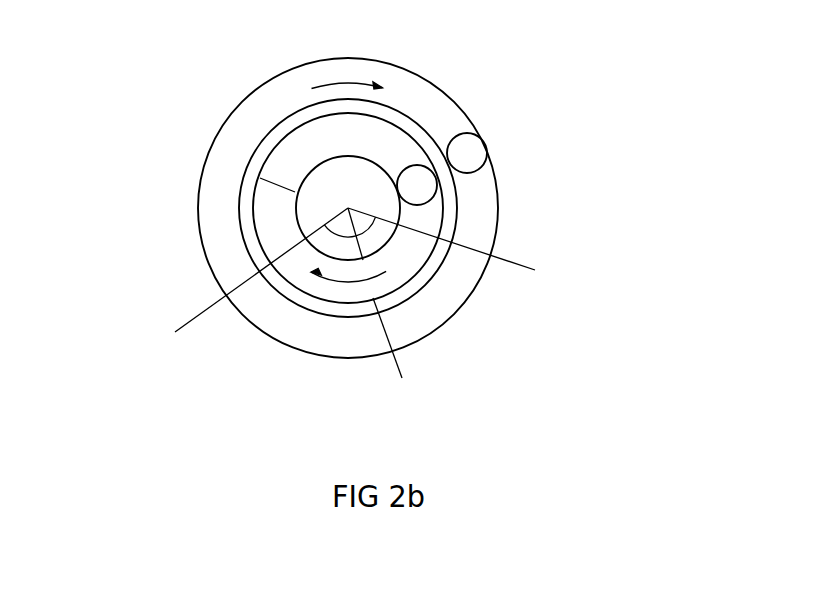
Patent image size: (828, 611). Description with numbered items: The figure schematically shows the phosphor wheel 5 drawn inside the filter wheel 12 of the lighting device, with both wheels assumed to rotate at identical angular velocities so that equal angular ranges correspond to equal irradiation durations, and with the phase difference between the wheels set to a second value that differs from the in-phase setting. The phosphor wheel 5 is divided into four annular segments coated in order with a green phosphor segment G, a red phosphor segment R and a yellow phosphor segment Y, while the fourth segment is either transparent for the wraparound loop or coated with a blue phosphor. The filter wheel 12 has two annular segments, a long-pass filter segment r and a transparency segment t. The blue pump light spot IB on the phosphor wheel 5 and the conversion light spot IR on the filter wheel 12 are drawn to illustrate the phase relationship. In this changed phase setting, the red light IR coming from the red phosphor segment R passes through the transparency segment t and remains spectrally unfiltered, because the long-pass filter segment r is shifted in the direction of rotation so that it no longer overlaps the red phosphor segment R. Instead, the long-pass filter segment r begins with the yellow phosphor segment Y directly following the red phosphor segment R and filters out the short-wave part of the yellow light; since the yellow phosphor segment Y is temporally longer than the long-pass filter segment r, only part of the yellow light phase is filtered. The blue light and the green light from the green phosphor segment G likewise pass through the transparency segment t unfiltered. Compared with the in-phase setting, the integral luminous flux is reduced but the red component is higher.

The phosphor wheel 5 is at (323, 180).
The filter wheel 12 is at (237, 130).
The transparency segment t is at (430, 95).
The green phosphor segment G is at (400, 148).
The conversion light spot IR is at (467, 153).
The blue pump light spot IB is at (417, 186).
The red phosphor segment R is at (418, 216).
The long-pass filter segment r is at (453, 305).
The yellow phosphor segment Y is at (323, 288).